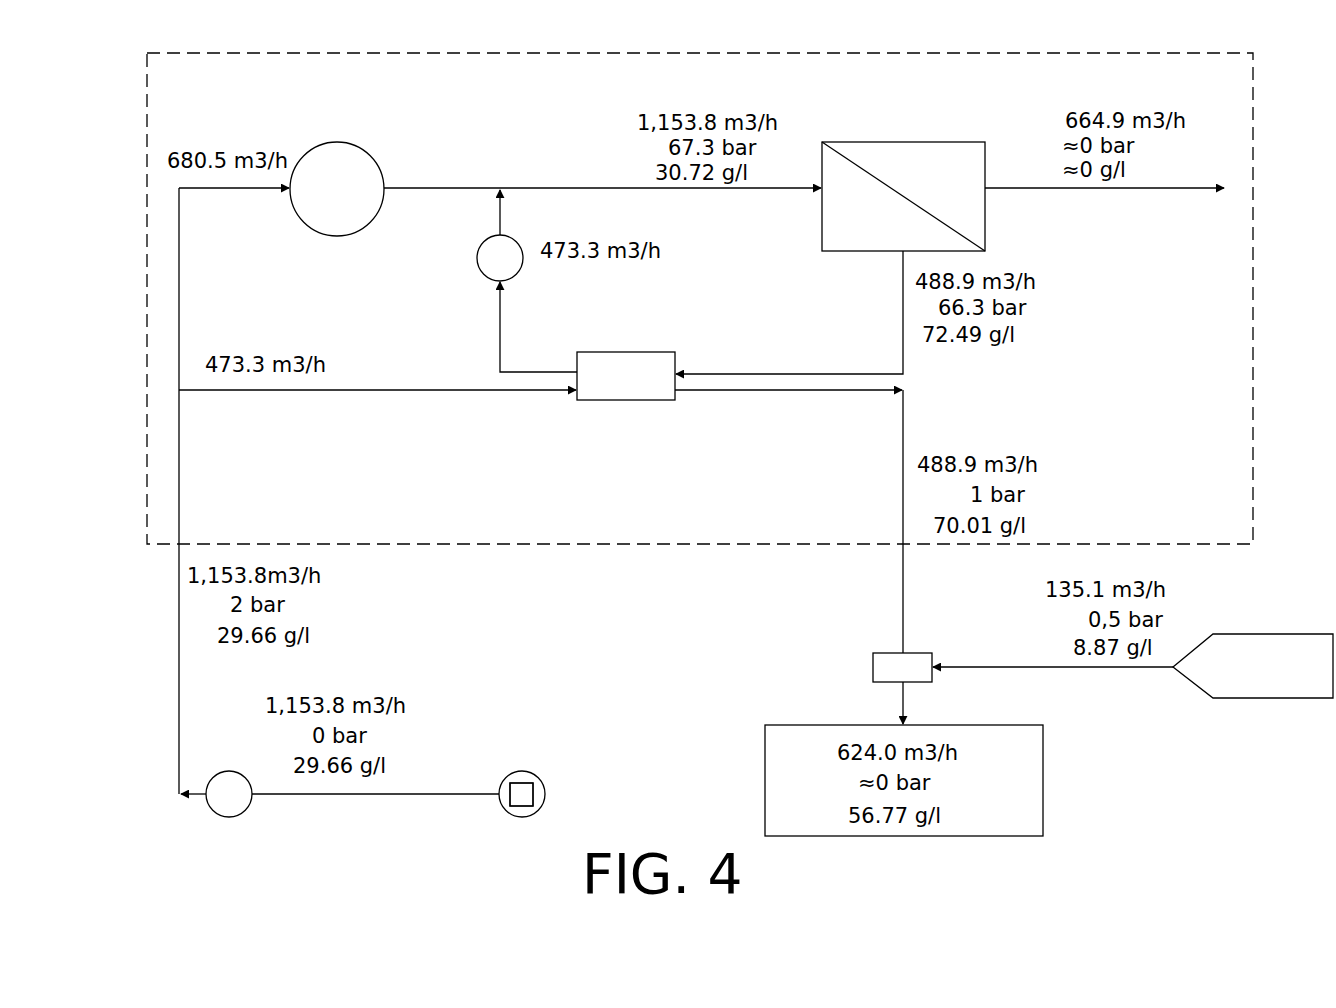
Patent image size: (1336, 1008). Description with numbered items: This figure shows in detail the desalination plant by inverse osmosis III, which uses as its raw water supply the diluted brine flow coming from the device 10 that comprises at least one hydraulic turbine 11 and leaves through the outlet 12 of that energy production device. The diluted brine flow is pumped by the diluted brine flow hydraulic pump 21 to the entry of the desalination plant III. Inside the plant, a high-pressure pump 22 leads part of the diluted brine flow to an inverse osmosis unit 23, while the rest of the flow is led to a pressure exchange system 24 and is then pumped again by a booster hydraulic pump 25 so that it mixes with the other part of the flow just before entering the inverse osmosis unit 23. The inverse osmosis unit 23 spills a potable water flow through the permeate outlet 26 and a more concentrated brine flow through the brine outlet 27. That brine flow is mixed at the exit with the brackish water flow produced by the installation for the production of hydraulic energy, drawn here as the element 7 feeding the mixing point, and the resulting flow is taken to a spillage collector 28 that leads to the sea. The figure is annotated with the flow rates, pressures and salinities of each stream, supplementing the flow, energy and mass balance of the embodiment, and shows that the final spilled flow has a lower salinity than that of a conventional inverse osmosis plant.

The desalination plant by inverse osmosis III is at (160, 125).
The seawater intake 7 is at (1273, 633).
The device comprising at least one hydraulic turbine 10 is at (540, 778).
The hydraulic turbine 11 is at (514, 781).
The outlet of the energy production device 12 is at (511, 803).
The diluted brine flow hydraulic pump 21 is at (236, 805).
The high-pressure pump 22 is at (377, 166).
The inverse osmosis unit 23 is at (866, 140).
The pressure exchange system 24 is at (641, 366).
The booster hydraulic pump 25 is at (475, 270).
The permeate outlet 26 is at (1021, 185).
The brine outlet 27 is at (900, 480).
The spillage collector 28 is at (882, 667).